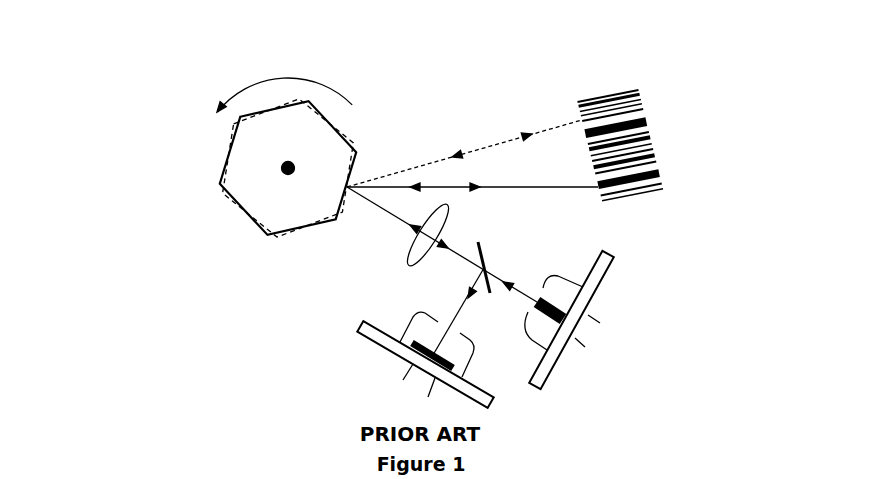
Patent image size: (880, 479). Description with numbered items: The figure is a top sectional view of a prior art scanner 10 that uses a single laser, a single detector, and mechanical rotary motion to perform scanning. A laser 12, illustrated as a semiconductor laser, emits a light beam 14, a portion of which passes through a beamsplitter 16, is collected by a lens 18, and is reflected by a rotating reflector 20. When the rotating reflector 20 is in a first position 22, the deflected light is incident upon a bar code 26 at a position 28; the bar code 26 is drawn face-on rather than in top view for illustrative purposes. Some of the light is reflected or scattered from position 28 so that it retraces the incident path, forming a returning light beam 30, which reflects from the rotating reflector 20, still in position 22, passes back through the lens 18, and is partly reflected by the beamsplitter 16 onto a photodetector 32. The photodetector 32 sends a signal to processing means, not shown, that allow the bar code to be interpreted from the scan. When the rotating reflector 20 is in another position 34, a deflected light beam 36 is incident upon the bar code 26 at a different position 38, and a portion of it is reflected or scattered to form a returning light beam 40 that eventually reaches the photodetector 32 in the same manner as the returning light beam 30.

The scanner 10 is at (127, 90).
The laser 12 is at (563, 312).
The light beam 14 is at (508, 283).
The beamsplitter 16 is at (491, 262).
The lens 18 is at (441, 228).
The rotating reflector 20 is at (257, 199).
The position 22 is at (222, 173).
The bar code 26 is at (655, 173).
The position 28 is at (595, 189).
The returning light beam 30 is at (416, 186).
The photodetector 32 is at (412, 347).
The position 34 is at (227, 137).
The deflected light beam 36 is at (527, 128).
The position 38 is at (577, 114).
The returning light beam 40 is at (451, 156).